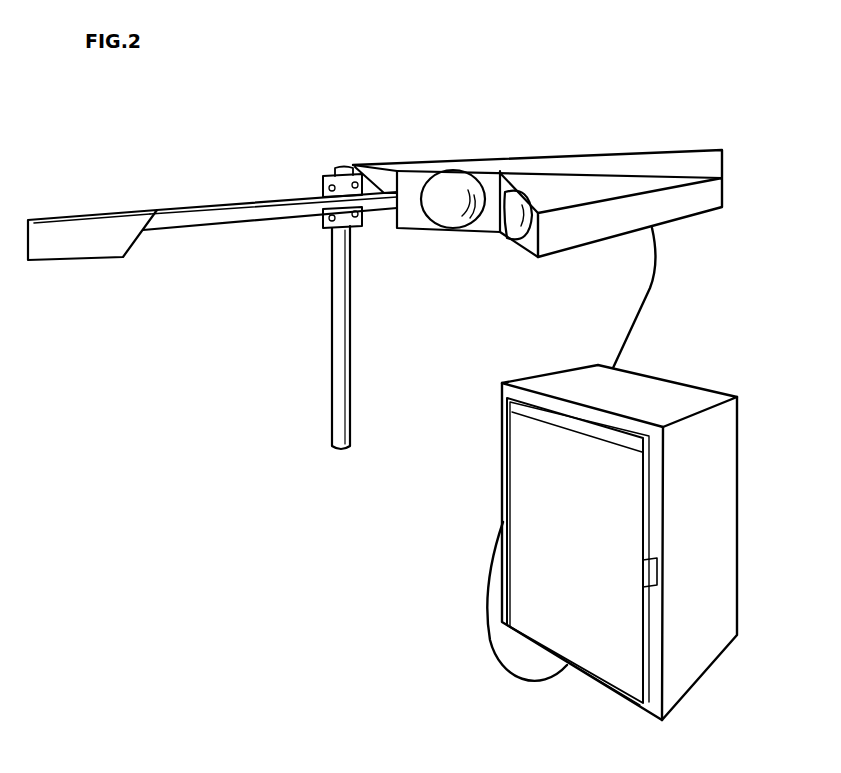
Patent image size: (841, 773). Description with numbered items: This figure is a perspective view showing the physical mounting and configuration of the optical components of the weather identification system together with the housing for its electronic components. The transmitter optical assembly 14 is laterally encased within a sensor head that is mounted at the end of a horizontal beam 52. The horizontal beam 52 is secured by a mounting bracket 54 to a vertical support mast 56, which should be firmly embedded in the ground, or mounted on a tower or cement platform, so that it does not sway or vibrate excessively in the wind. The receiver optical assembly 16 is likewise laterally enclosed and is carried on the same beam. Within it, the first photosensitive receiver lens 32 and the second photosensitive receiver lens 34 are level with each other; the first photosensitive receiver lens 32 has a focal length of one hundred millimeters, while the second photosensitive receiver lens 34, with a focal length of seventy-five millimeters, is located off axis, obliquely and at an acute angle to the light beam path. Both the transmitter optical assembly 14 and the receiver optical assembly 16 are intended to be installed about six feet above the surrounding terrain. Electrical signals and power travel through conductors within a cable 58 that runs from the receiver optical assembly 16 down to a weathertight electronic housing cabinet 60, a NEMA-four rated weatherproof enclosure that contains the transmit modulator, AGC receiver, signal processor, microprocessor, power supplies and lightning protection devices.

The transmitter optical assembly 14 is at (100, 212).
The horizontal beam 52 is at (237, 213).
The mounting bracket 54 is at (335, 222).
The vertical support mast 56 is at (336, 334).
The receiver optical assembly 16 is at (551, 157).
The second photosensitive receiver lens 34 is at (443, 210).
The first photosensitive receiver lens 32 is at (517, 229).
The cable 58 is at (651, 288).
The electronic housing cabinet 60 is at (677, 396).